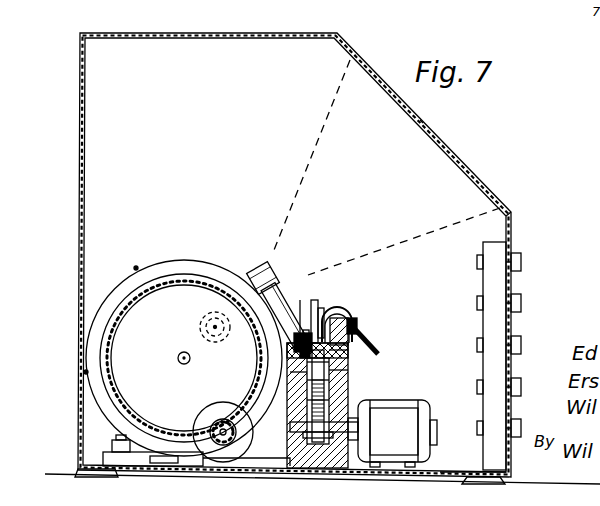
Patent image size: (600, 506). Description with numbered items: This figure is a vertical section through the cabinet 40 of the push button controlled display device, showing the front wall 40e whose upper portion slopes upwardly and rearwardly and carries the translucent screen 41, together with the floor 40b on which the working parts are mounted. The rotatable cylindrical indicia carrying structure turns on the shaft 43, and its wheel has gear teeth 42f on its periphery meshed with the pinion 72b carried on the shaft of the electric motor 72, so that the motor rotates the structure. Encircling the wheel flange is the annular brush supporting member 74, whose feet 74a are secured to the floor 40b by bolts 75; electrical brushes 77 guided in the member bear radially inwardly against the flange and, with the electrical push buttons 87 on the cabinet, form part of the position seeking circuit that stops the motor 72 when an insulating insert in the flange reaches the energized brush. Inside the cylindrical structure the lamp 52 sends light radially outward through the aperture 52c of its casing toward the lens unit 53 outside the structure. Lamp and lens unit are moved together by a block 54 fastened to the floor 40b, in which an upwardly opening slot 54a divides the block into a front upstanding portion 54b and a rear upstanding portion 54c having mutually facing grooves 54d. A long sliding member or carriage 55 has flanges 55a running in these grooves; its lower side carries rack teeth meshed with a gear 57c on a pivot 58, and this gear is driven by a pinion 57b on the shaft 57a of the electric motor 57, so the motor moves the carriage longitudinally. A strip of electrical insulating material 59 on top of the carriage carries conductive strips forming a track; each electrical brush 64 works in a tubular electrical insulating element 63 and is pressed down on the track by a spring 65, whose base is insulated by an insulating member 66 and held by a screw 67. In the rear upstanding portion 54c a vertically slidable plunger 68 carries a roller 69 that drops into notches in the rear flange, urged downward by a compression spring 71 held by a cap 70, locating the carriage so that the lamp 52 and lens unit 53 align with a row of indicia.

The cabinet 40 is at (152, 32).
The translucent screen 41 is at (447, 126).
The front wall 40e is at (512, 233).
The floor 40b is at (448, 471).
The electrical push buttons 87 is at (522, 345).
The annular brush supporting member 74 is at (192, 263).
The electrical brush 77 is at (134, 269).
The gear teeth 42f is at (117, 394).
The shaft 43 is at (178, 356).
The lamp 52 is at (200, 326).
The aperture 52c is at (229, 312).
The electric motor 72 is at (200, 420).
The pinion 72b is at (224, 437).
The feet 74a is at (105, 456).
The bolts 75 is at (118, 441).
The lens unit 53 is at (262, 272).
The block 54 is at (290, 454).
The cap 70 is at (290, 346).
The rear upstanding portion 54c is at (311, 411).
The pinion 57b is at (300, 429).
The plunger 68 is at (296, 342).
The roller 69 is at (300, 352).
The gear 57c is at (300, 380).
The tubular electrical insulating element 63 is at (316, 300).
The electrical brush 64 is at (323, 318).
The spring 65 is at (347, 318).
The insulating member 66 is at (352, 324).
The screw 67 is at (357, 330).
The strip of electrical insulating material 59 is at (362, 336).
The sliding member or carriage 55 is at (350, 340).
The grooves 54d is at (349, 351).
The flanges 55a is at (330, 361).
The front upstanding portion 54b is at (350, 371).
The compression spring 71 is at (305, 330).
The slot 54a is at (330, 379).
The pivot 58 is at (330, 400).
The electric motor 57 is at (432, 416).
The shaft 57a is at (402, 439).